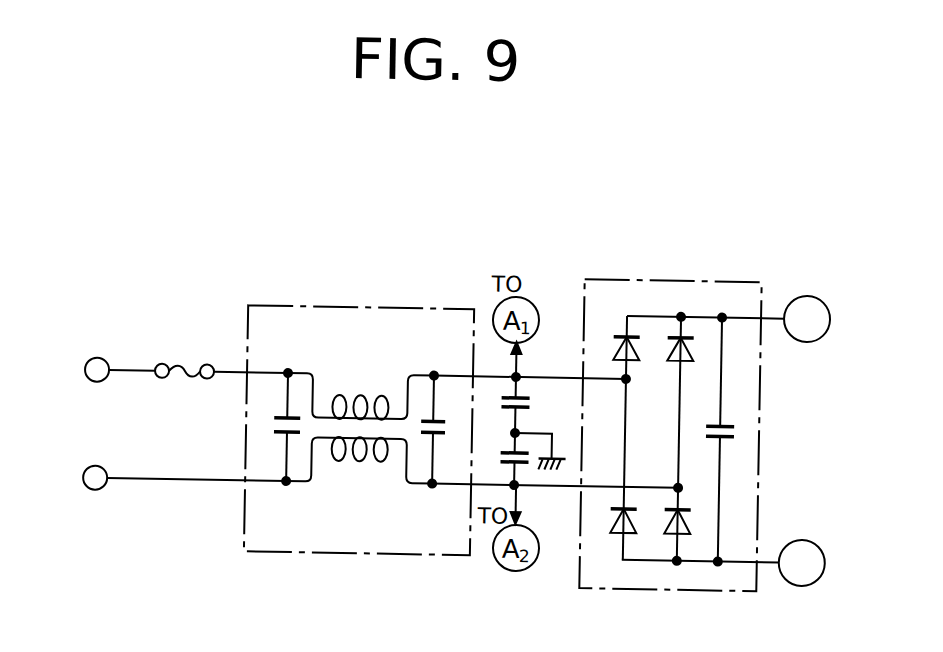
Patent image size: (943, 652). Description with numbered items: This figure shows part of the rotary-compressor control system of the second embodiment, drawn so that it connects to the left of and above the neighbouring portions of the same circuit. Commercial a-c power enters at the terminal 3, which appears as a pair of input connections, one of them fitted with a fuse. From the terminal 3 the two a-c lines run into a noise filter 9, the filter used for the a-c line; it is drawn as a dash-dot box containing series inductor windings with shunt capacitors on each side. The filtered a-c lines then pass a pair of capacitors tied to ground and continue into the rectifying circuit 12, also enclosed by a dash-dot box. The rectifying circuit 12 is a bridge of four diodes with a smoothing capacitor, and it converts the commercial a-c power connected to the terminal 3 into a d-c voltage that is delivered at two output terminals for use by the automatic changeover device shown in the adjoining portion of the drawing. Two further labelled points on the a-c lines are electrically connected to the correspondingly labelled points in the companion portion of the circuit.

The terminal 3 is at (96, 364).
The noise filter 9 is at (280, 556).
The rectifying circuit 12 is at (629, 288).